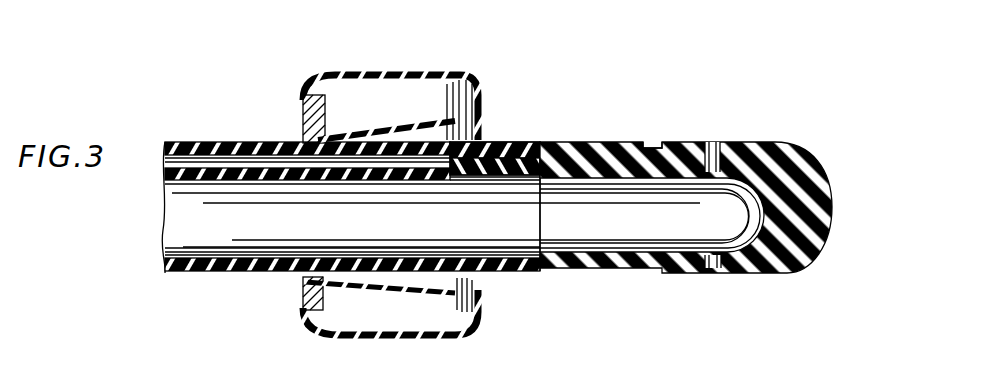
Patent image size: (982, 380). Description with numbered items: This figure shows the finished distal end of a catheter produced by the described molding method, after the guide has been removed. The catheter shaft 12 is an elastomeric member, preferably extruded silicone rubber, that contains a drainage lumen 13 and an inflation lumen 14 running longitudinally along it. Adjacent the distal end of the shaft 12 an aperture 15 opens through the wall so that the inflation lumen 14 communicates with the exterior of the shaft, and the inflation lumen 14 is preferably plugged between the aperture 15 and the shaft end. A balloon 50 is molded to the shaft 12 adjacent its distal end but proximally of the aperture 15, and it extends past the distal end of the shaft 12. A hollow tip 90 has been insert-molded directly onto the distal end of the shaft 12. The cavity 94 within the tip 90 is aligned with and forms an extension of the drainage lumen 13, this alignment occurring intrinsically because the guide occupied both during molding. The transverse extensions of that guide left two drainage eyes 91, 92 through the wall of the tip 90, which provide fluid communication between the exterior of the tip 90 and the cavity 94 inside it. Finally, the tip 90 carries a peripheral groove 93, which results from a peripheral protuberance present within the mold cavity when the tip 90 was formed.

The catheter shaft 12 is at (247, 277).
The drainage lumen 13 is at (340, 233).
The inflation lumen 14 is at (272, 160).
The aperture 15 is at (460, 134).
The balloon 50 is at (467, 99).
The hollow tip 90 is at (583, 277).
The drainage eye 91 is at (718, 278).
The drainage eye 92 is at (715, 140).
The peripheral groove 93 is at (648, 140).
The cavity 94 is at (660, 233).